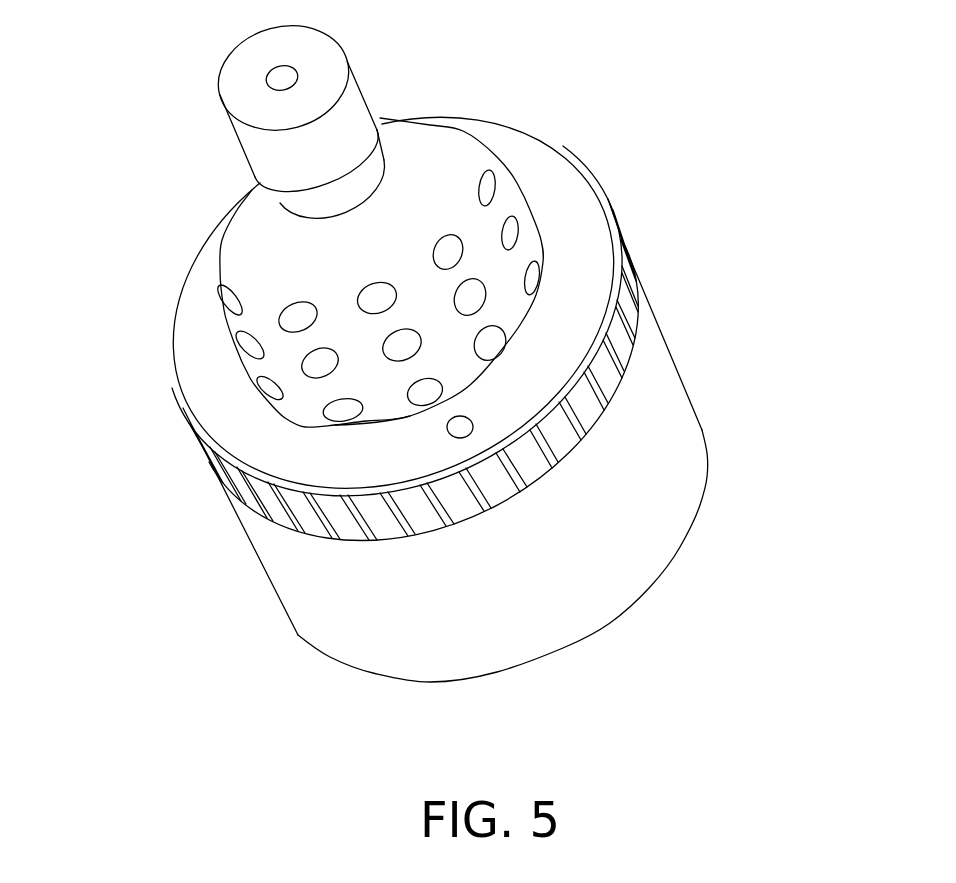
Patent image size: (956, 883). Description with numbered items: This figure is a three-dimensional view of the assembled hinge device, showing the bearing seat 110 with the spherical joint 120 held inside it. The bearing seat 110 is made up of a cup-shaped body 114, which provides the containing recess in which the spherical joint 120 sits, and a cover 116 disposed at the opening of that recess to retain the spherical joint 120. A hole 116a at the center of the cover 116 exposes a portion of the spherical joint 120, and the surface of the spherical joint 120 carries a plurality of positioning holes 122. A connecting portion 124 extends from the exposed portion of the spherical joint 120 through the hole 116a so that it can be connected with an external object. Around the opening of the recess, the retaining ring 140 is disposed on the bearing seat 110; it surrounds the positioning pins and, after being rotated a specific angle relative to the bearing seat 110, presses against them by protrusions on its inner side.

The bearing seat 110 is at (445, 462).
The cup-shaped body 114 is at (658, 373).
The cover 116 is at (547, 172).
The hole 116a is at (381, 418).
The spherical joint 120 is at (410, 147).
The positioning holes 122 is at (323, 367).
The connecting portion 124 is at (345, 115).
The retaining ring 140 is at (620, 247).